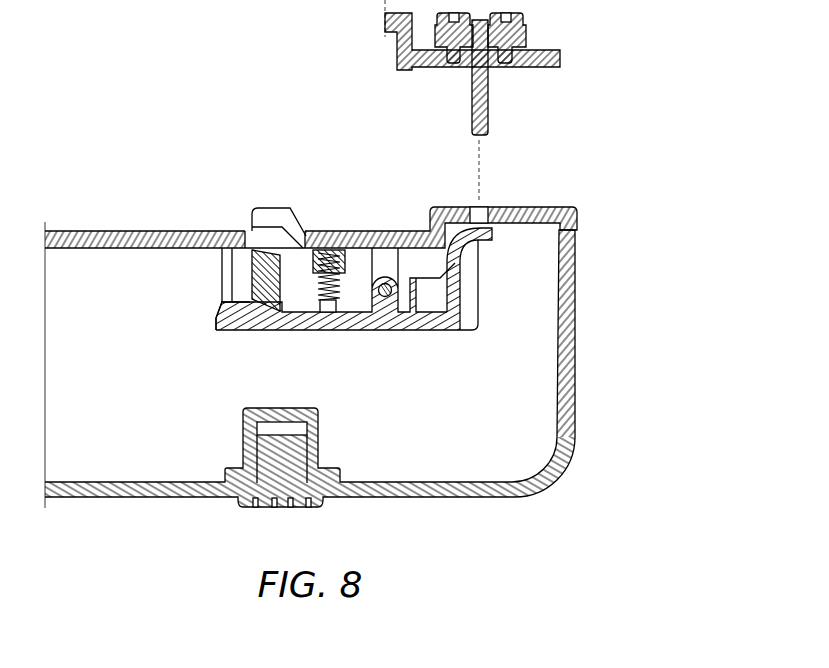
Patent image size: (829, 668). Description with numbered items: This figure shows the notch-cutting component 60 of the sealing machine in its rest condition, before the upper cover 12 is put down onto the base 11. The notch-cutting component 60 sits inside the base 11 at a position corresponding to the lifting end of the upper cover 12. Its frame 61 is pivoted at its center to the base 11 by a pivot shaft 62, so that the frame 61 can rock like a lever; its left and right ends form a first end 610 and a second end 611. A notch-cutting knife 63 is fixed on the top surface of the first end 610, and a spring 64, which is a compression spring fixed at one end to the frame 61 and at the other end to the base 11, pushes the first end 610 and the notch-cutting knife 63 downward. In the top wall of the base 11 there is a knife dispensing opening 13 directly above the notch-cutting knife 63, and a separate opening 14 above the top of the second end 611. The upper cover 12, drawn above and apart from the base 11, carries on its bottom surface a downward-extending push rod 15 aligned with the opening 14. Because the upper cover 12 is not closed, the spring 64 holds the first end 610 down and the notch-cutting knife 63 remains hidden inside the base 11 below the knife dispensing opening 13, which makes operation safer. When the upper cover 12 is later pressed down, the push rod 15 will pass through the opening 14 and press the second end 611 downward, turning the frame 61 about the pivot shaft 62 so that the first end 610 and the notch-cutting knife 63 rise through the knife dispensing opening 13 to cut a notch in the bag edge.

The base 11 is at (563, 362).
The upper cover 12 is at (560, 55).
The knife dispensing opening 13 is at (278, 250).
The opening 14 is at (478, 218).
The push rod 15 is at (480, 103).
The notch-cutting component 60 is at (468, 295).
The frame 61 is at (403, 320).
The first end 610 is at (256, 322).
The second end 611 is at (452, 322).
The pivot shaft 62 is at (385, 286).
The notch-cutting knife 63 is at (268, 267).
The spring 64 is at (327, 262).